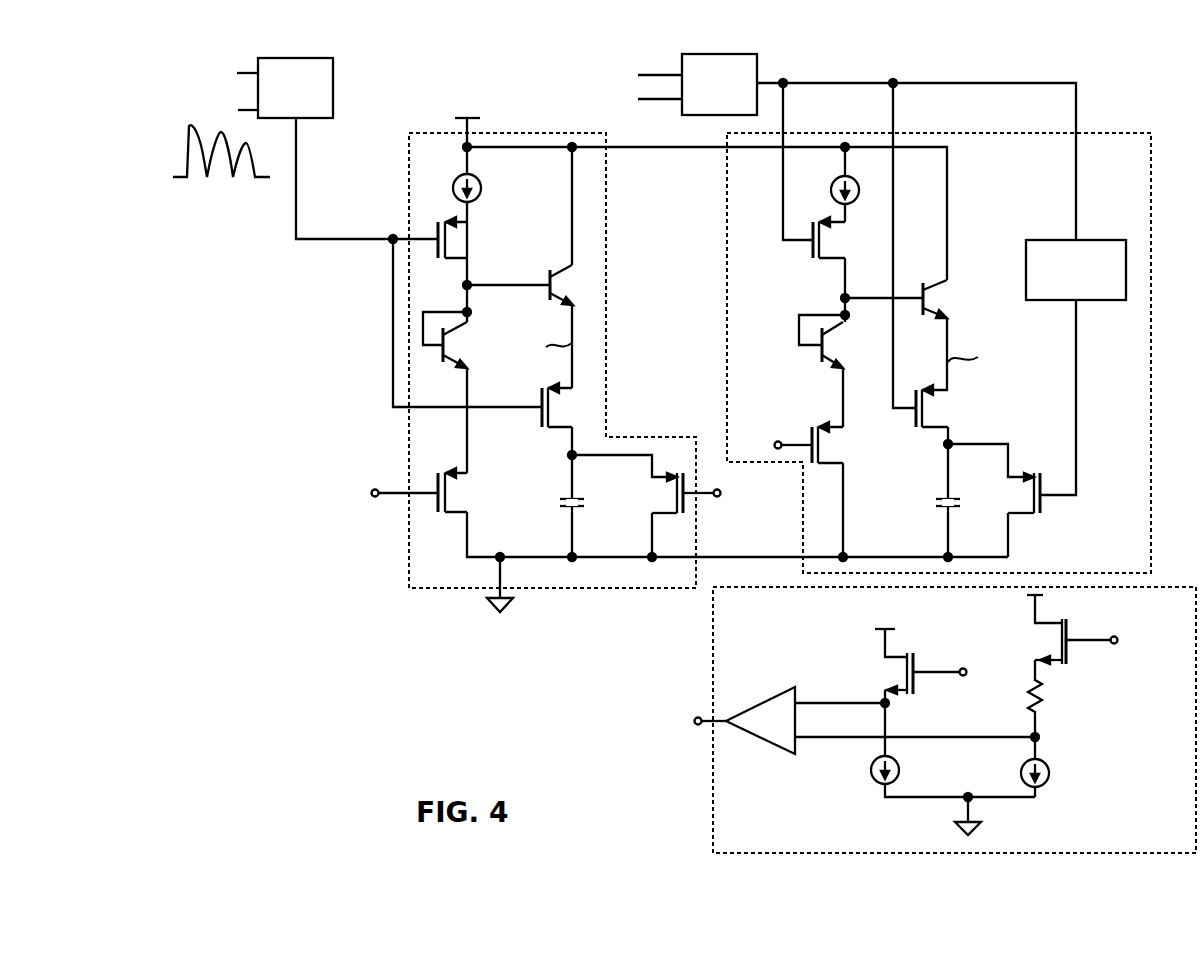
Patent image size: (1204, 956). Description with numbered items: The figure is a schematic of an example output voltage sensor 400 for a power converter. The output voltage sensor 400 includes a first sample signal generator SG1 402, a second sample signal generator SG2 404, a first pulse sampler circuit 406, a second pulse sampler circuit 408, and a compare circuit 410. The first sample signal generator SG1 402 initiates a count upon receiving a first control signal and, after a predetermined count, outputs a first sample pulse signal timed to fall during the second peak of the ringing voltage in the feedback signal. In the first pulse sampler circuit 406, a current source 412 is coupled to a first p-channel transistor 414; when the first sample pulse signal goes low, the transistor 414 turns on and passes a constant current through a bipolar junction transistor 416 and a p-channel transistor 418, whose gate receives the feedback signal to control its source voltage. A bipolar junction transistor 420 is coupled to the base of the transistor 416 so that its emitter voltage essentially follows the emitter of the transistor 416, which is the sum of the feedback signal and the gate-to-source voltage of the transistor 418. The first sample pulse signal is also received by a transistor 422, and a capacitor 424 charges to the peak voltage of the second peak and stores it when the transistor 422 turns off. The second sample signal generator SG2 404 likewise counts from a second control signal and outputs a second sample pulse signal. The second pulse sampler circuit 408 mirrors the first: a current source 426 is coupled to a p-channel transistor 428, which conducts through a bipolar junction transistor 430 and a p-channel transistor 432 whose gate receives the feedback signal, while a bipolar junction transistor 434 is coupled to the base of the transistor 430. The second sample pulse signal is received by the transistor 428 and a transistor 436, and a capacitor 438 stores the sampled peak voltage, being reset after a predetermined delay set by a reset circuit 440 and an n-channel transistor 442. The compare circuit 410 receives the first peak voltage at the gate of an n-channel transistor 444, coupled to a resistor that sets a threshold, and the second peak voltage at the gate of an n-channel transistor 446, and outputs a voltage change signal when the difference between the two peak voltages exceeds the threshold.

The output voltage sensor 400 is at (1193, 72).
The first sample signal generator SG1 402 is at (314, 118).
The second sample signal generator SG2 404 is at (677, 107).
The first pulse sampler circuit 406 is at (402, 428).
The second pulse sampler circuit 408 is at (752, 240).
The compare circuit 410 is at (710, 638).
The current source 412 is at (478, 200).
The first p-channel transistor 414 is at (450, 241).
The bipolar junction transistor 416 is at (452, 350).
The p-channel transistor 418 is at (450, 489).
The bipolar junction transistor 420 is at (546, 296).
The transistor 422 is at (552, 404).
The capacitor 424 is at (582, 512).
The current source 426 is at (676, 517).
The p-channel transistor 428 is at (807, 248).
The bipolar junction transistor 430 is at (835, 345).
The p-channel transistor 432 is at (843, 440).
The bipolar junction transistor 434 is at (947, 300).
The transistor 436 is at (930, 410).
The capacitor 438 is at (955, 512).
The reset circuit 440 is at (1090, 303).
The n-channel transistor 442 is at (1025, 518).
The n-channel transistor 444 is at (1065, 665).
The n-channel transistor 446 is at (920, 690).